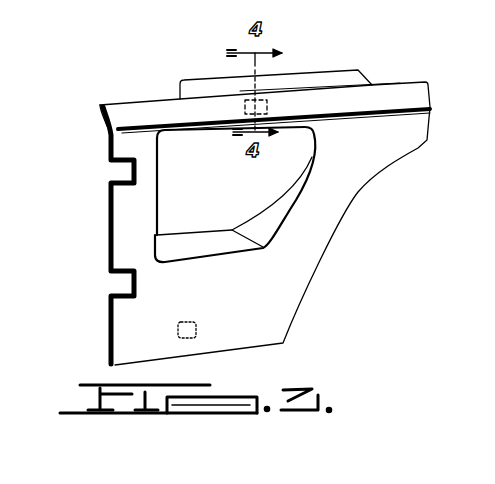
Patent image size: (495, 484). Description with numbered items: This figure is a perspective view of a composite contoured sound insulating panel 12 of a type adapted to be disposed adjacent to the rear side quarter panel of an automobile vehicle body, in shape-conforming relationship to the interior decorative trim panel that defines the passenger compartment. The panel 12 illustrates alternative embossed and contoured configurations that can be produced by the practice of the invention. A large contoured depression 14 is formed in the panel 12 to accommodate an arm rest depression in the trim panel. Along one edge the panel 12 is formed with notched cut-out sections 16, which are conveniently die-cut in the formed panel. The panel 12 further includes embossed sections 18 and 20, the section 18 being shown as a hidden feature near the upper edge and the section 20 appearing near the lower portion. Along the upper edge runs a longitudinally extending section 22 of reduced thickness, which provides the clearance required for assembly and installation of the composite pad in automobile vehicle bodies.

The composite sound insulating panel 12 is at (355, 200).
The contoured depression 14 is at (235, 208).
The notched cut-out sections 16 is at (397, 83).
The embossed section 18 is at (245, 108).
The embossed section 20 is at (192, 340).
The longitudinally extending section 22 is at (317, 77).